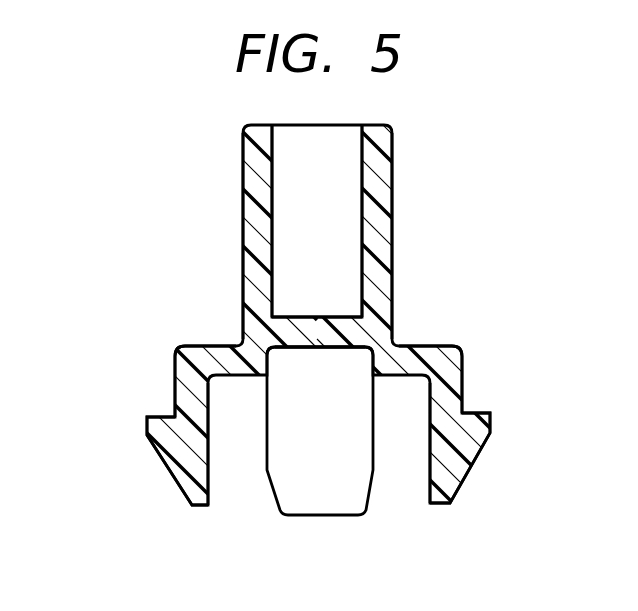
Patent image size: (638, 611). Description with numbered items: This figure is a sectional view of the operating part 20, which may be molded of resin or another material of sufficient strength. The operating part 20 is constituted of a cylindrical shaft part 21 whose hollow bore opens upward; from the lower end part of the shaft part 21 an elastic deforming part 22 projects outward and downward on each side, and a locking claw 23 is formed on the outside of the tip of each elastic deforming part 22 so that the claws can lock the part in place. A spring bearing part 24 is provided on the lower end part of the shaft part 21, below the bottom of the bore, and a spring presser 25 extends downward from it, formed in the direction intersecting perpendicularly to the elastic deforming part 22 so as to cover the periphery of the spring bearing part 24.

The operating part 20 is at (406, 154).
The cylindrical shaft part 21 is at (393, 200).
The elastic deforming part 22 is at (188, 346).
The locking claw 23 is at (147, 427).
The spring bearing part 24 is at (314, 356).
The spring presser 25 is at (308, 517).